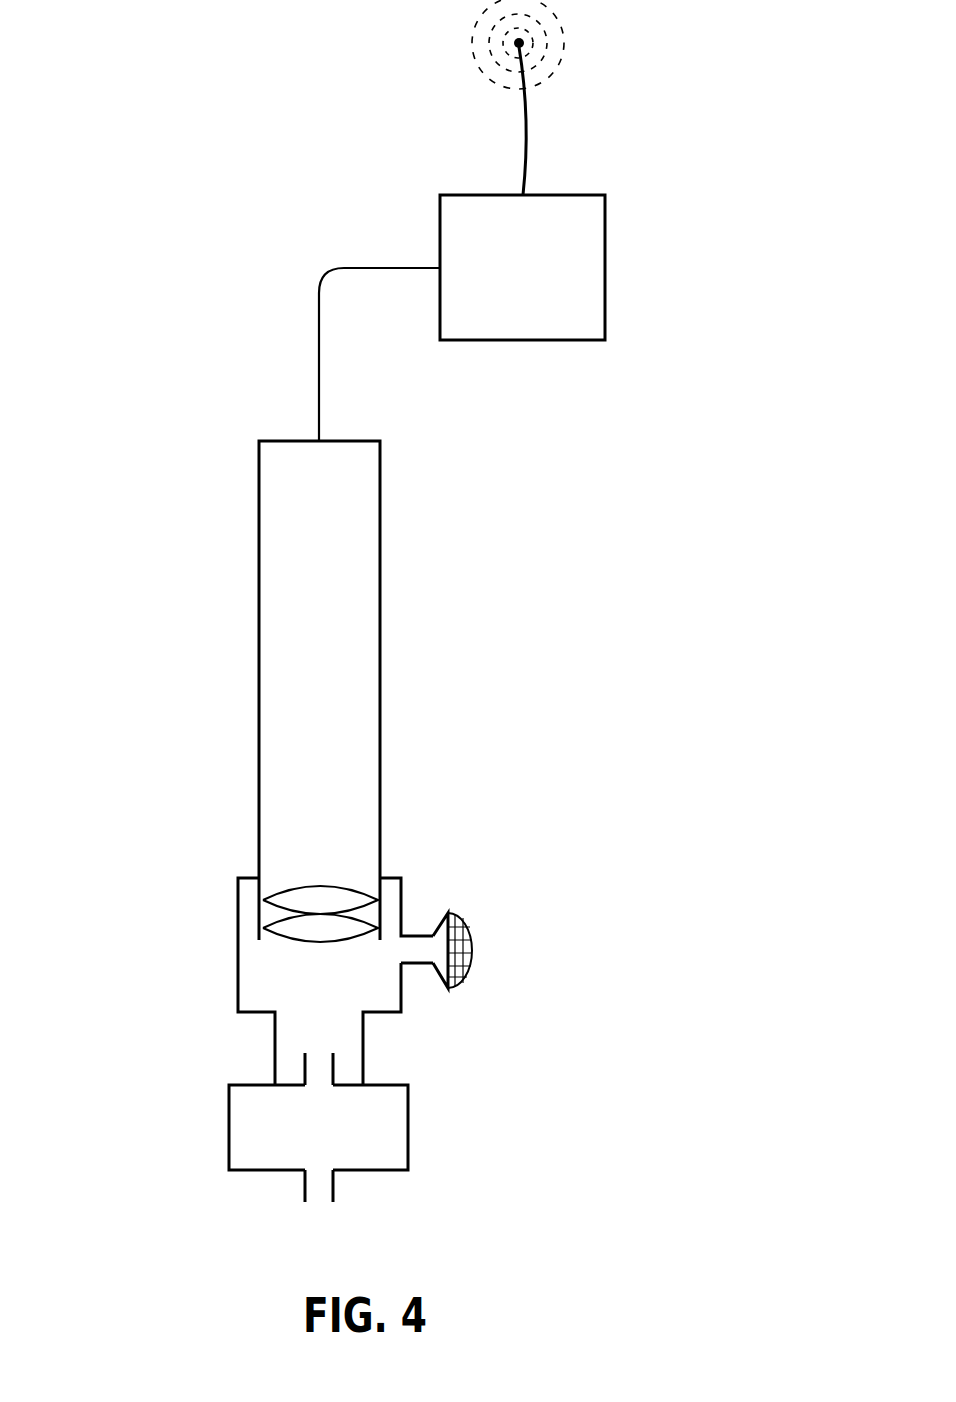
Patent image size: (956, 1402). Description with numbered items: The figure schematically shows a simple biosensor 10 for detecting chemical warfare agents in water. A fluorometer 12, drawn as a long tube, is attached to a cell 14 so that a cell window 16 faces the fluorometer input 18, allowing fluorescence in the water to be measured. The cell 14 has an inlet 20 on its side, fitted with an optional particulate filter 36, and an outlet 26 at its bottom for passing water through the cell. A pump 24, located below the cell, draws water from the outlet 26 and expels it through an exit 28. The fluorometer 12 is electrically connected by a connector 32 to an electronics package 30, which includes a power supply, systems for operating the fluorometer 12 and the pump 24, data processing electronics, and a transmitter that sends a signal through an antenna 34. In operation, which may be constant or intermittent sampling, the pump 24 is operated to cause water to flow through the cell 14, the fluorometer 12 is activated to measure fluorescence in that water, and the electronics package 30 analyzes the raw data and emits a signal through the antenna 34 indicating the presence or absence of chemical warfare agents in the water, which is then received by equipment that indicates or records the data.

The biosensor 10 is at (156, 591).
The fluorometer 12 is at (380, 568).
The cell 14 is at (402, 900).
The cell window 16 is at (290, 928).
The fluorometer input 18 is at (290, 900).
The inlet 20 is at (413, 935).
The pump 24 is at (408, 1132).
The outlet 26 is at (336, 1062).
The exit 28 is at (336, 1192).
The electronics package 30 is at (605, 272).
The connector 32 is at (319, 290).
The antenna 34 is at (530, 124).
The particulate filter 36 is at (472, 960).